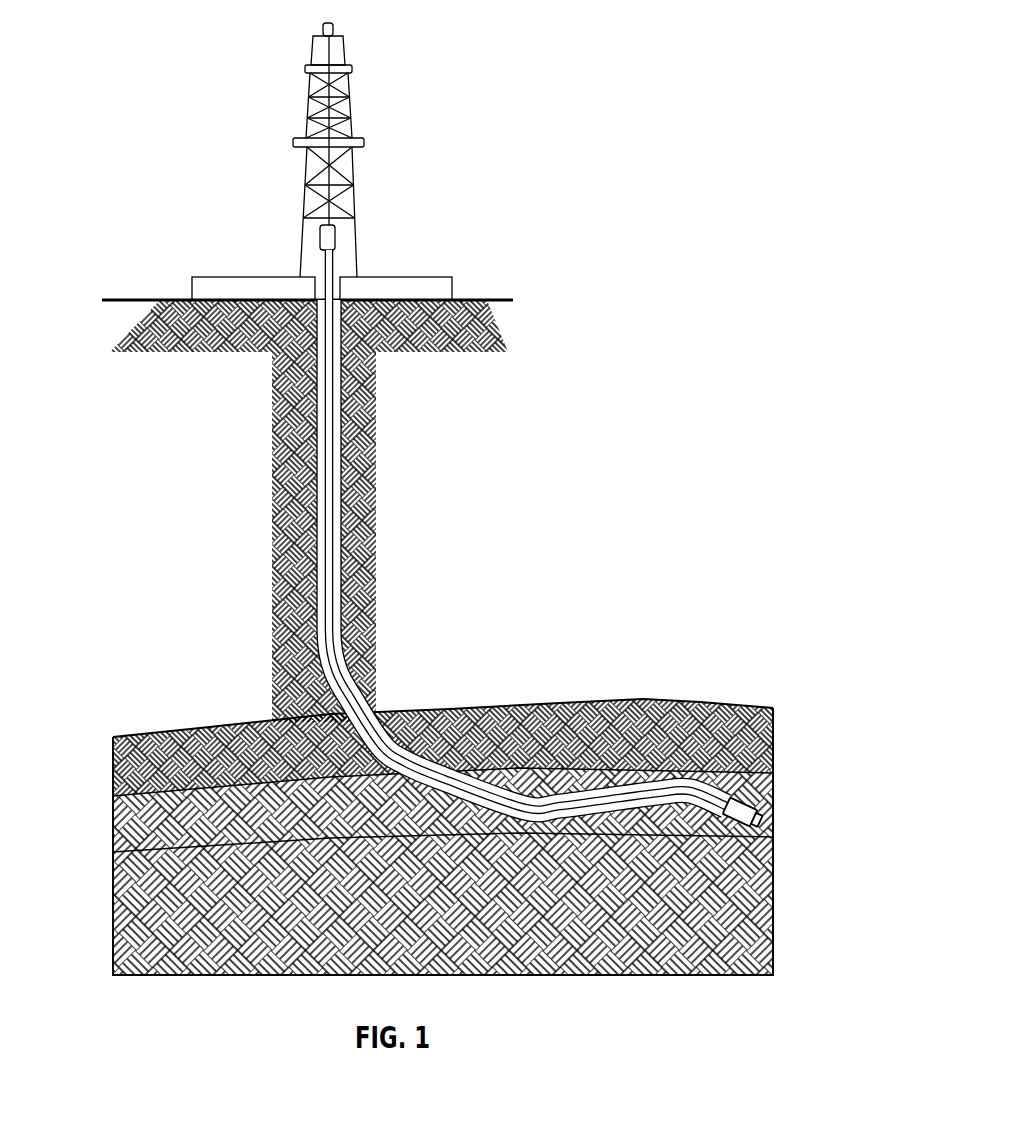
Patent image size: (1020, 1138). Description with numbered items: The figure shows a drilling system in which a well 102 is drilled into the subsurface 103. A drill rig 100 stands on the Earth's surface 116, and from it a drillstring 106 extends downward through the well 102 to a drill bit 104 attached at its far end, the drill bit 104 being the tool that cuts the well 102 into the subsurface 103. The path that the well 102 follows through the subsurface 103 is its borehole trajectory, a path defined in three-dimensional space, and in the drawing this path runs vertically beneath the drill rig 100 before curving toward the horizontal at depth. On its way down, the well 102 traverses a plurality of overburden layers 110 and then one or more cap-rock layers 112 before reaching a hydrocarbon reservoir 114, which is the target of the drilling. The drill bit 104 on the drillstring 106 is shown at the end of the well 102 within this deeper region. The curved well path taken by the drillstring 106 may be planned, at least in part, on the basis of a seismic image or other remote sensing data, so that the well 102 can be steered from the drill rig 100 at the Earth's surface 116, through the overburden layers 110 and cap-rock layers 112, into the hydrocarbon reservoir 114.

The drill rig 100 is at (353, 173).
The well 102 is at (315, 522).
The subsurface 103 is at (130, 338).
The drill bit 104 is at (762, 813).
The drillstring 106 is at (328, 268).
The overburden layers 110 is at (372, 403).
The cap-rock layers 112 is at (118, 752).
The hydrocarbon reservoir 114 is at (118, 823).
The Earth's surface 116 is at (480, 300).